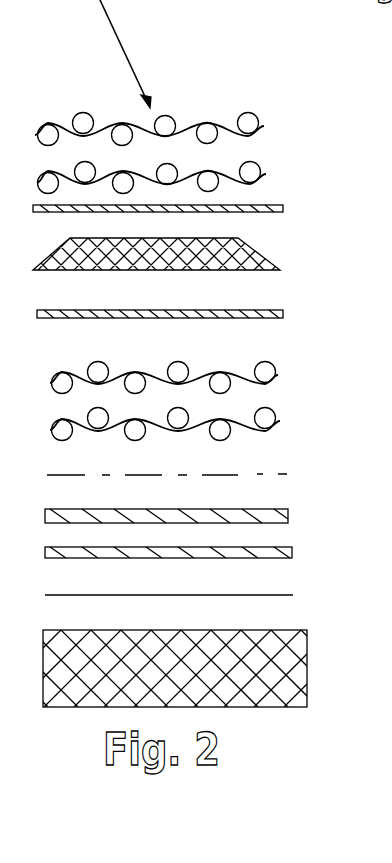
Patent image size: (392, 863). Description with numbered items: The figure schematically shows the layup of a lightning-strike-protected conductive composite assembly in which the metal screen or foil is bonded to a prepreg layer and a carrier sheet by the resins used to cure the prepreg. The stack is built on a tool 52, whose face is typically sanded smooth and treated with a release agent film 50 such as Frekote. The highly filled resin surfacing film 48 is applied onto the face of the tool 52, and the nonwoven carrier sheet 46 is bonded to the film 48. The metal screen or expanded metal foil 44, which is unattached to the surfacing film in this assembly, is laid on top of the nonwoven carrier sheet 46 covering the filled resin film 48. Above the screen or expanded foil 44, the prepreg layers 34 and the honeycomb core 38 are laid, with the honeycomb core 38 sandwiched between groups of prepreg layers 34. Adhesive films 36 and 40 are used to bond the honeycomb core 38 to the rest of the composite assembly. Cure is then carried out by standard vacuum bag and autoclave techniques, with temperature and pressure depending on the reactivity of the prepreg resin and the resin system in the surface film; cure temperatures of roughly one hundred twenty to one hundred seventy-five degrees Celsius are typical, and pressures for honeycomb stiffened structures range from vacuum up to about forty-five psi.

The prepreg layers 34 is at (270, 172).
The adhesive film 36 is at (281, 206).
The honeycomb core 38 is at (258, 251).
The adhesive film 40 is at (232, 317).
The metal screen or expanded metal foil 44 is at (238, 473).
The nonwoven carrier sheet 46 is at (290, 509).
The highly filled resin surfacing film 48 is at (292, 552).
The release agent film 50 is at (258, 597).
The tool 52 is at (307, 682).